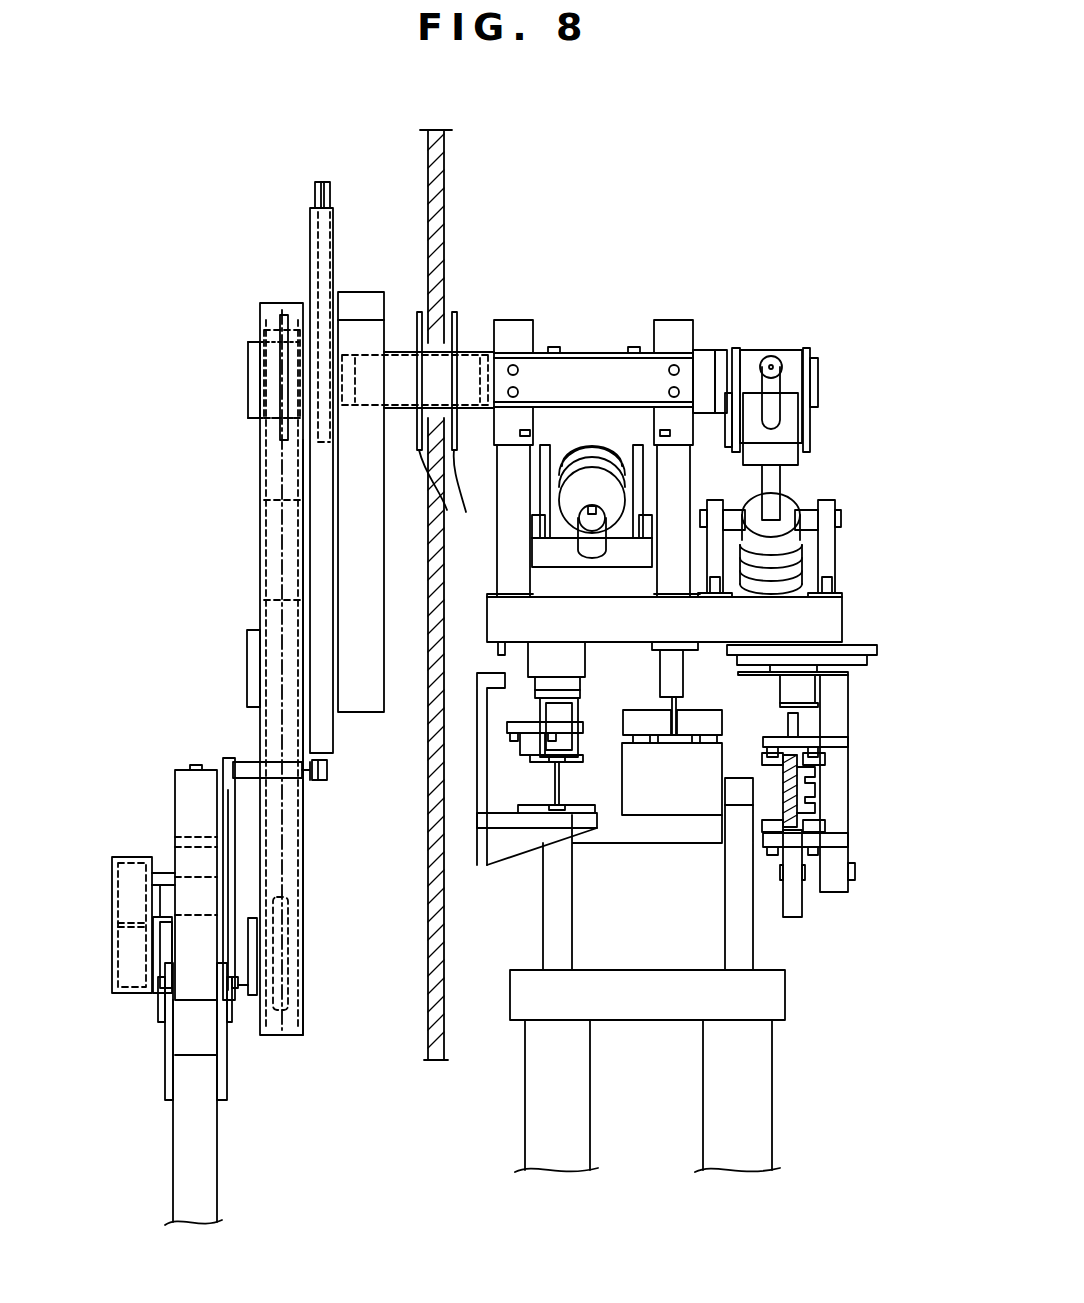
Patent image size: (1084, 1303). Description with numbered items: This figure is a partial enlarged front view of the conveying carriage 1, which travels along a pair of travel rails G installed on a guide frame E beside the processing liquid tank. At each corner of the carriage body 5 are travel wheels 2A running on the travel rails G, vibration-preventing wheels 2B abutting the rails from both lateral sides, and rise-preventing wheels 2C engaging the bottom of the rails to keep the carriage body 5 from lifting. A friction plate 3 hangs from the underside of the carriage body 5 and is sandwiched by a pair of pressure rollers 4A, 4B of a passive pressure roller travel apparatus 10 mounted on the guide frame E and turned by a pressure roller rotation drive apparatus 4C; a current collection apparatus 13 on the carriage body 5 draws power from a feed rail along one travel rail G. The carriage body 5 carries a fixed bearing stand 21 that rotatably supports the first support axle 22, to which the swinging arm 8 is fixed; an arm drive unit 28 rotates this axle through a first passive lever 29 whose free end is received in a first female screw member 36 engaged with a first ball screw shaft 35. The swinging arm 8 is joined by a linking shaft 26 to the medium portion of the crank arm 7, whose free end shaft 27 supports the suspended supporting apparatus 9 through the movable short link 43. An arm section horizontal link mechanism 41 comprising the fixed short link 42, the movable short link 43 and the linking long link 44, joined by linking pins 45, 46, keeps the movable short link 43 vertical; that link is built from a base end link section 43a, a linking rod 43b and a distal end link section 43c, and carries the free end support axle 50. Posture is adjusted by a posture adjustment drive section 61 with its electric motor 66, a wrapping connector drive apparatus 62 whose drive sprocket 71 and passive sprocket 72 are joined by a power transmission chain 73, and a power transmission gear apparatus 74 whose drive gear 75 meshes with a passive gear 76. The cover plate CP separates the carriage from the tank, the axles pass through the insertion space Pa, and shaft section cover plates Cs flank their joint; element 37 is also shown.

The conveying carriage 1 is at (816, 258).
The cover plate CP is at (444, 168).
The insertion space Pa is at (455, 370).
The shaft section cover plates Cs is at (450, 495).
The carriage body 5 is at (848, 590).
The crank arm 7 is at (250, 545).
The swinging arm 8 is at (383, 555).
The suspended supporting apparatus 9 is at (153, 752).
The pressure roller travel apparatus 10 is at (652, 818).
The current collection apparatus 13 is at (808, 784).
The fixed bearing stand 21 is at (674, 312).
The first support axle 22 is at (703, 355).
The linking shaft 26 is at (252, 672).
The free end shaft 27 is at (232, 988).
The arm drive unit 28 is at (852, 386).
The first raising and lowering passive lever 29 is at (805, 430).
The first ball screw shaft 35 is at (773, 392).
The first female screw member 36 is at (787, 460).
The spring unit 37 is at (825, 535).
The arm section horizontal link mechanism 41 is at (344, 228).
The fixed short link 42 is at (318, 217).
The movable short link 43 is at (222, 752).
The base end link section 43a is at (232, 852).
The linking rod 43b is at (248, 762).
The distal end link section 43c is at (312, 778).
The linking long link 44 is at (322, 520).
The linking pin 45 is at (325, 180).
The linking pin 46 is at (325, 770).
The free end support axle 50 is at (162, 875).
The posture adjustment drive section 61 is at (595, 330).
The wrapping connector drive apparatus 62 is at (268, 317).
The posture adjustment and drive apparatus 66 is at (585, 540).
The drive sprocket 71 is at (278, 425).
The passive sprocket 72 is at (290, 1003).
The power transmission chain 73 is at (276, 600).
The power transmission gear apparatus 74 is at (105, 925).
The drive gear 75 is at (118, 960).
The passive gear 76 is at (150, 878).
The travel wheels 2A is at (562, 706).
The vibration-preventing wheels 2B is at (515, 760).
The rise-preventing wheels 2C is at (790, 905).
The friction plate 3 is at (675, 706).
The pressure roller 4A is at (645, 723).
The pressure roller 4B is at (720, 722).
The pressure roller rotation drive apparatus 4C is at (672, 775).
The travel rails G is at (547, 785).
The guide frame E is at (778, 1076).